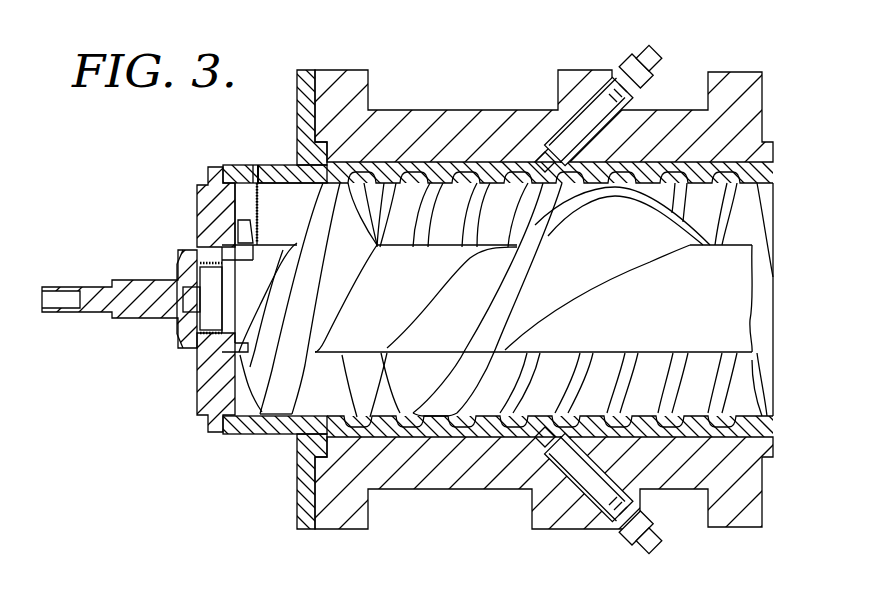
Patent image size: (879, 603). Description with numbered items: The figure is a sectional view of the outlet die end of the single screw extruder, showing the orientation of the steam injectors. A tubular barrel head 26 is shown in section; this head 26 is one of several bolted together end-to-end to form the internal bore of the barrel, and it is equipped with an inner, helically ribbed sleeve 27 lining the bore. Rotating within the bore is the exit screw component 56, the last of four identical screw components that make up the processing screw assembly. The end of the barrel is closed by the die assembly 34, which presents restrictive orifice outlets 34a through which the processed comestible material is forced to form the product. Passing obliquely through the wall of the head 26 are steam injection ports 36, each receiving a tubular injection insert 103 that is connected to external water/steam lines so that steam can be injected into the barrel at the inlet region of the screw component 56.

The tubular section or head 26 is at (425, 120).
The helically ribbed sleeve 27 is at (752, 387).
The die assembly 34 is at (205, 149).
The restrictive orifice outlet 34a is at (255, 163).
The steam injection port 36 is at (566, 98).
The exit screw component 56 is at (497, 300).
The tubular injection insert 103 is at (663, 72).